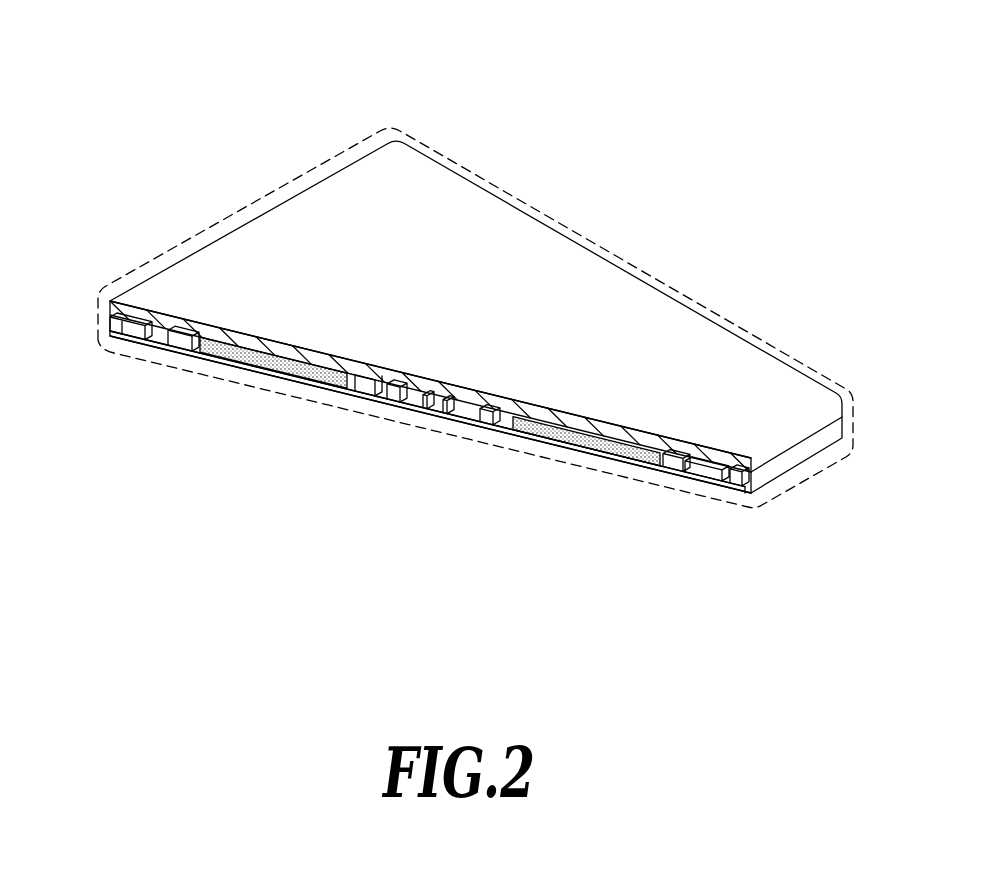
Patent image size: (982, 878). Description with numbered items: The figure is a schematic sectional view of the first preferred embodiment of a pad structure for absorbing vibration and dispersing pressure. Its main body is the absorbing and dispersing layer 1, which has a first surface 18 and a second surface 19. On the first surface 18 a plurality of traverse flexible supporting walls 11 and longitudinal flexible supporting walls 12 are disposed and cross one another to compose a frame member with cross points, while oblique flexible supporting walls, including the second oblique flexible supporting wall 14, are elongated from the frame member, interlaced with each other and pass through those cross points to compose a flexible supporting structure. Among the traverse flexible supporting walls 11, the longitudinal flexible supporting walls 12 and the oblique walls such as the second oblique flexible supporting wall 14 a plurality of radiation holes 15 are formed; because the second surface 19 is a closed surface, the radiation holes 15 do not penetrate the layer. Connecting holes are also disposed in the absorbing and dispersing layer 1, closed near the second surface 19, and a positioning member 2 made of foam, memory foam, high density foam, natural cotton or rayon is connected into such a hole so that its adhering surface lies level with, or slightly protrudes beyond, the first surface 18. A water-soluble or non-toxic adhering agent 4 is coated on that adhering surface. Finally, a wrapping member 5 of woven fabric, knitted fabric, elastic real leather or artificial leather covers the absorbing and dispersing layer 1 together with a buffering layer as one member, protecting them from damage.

The absorbing and dispersing layer 1 is at (783, 465).
The positioning member 2 is at (596, 442).
The adhering agent 4 is at (541, 428).
The wrapping member 5 is at (307, 173).
The traverse flexible supporting walls 11 is at (194, 345).
The longitudinal flexible supporting walls 12 is at (468, 410).
The second oblique flexible supporting wall 14 is at (376, 394).
The radiation holes 15 is at (125, 333).
The first surface 18 is at (671, 456).
The second surface 19 is at (672, 477).